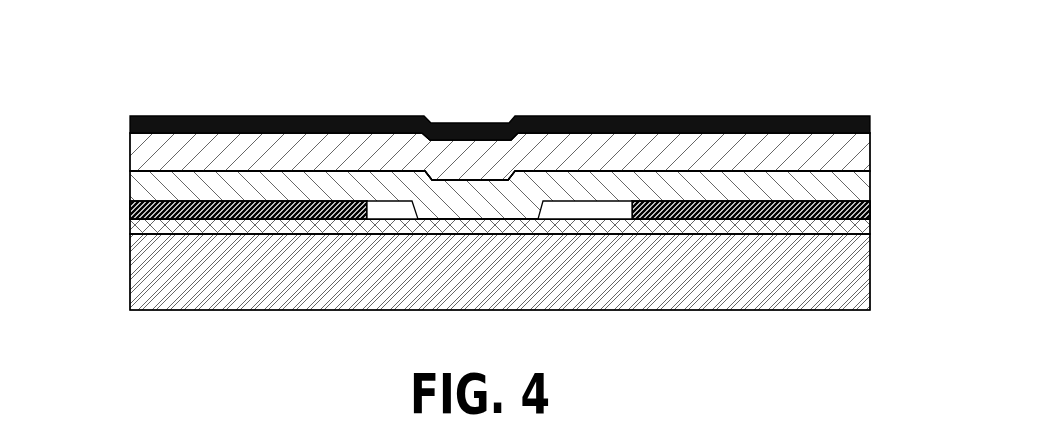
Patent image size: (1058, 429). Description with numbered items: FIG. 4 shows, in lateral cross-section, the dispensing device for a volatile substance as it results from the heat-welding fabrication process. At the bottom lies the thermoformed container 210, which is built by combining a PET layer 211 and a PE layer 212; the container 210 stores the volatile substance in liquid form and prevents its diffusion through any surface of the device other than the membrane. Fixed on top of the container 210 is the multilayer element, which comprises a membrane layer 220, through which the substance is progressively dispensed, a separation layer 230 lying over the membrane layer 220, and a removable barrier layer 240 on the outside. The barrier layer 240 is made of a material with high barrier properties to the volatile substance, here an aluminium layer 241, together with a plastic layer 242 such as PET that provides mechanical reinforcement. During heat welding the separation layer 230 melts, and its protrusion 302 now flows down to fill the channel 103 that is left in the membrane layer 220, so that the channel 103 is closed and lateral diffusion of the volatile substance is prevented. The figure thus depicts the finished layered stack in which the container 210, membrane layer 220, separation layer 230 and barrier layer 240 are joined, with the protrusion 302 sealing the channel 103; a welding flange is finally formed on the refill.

The channel 103 is at (573, 210).
The thermoformed container 210 is at (489, 258).
The PET layer 211 is at (857, 279).
The PE layer 212 is at (820, 227).
The membrane layer 220 is at (133, 210).
The separation layer 230 is at (147, 184).
The removable barrier layer 240 is at (489, 110).
The aluminium layer 241 is at (832, 152).
The plastic layer 242 is at (743, 123).
The protrusion 302 is at (433, 212).